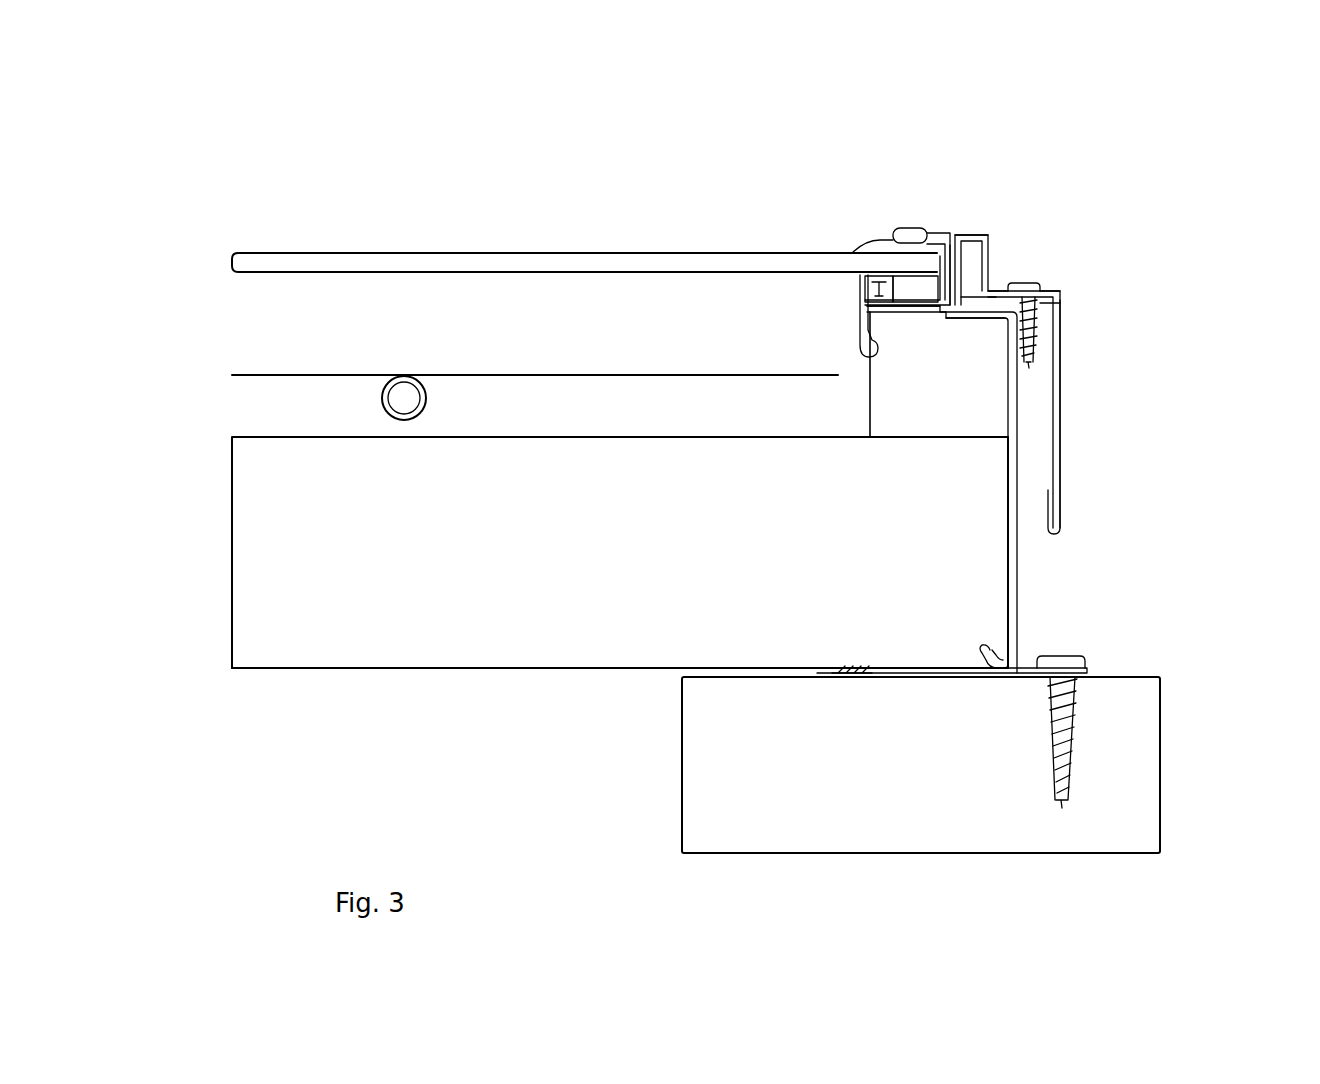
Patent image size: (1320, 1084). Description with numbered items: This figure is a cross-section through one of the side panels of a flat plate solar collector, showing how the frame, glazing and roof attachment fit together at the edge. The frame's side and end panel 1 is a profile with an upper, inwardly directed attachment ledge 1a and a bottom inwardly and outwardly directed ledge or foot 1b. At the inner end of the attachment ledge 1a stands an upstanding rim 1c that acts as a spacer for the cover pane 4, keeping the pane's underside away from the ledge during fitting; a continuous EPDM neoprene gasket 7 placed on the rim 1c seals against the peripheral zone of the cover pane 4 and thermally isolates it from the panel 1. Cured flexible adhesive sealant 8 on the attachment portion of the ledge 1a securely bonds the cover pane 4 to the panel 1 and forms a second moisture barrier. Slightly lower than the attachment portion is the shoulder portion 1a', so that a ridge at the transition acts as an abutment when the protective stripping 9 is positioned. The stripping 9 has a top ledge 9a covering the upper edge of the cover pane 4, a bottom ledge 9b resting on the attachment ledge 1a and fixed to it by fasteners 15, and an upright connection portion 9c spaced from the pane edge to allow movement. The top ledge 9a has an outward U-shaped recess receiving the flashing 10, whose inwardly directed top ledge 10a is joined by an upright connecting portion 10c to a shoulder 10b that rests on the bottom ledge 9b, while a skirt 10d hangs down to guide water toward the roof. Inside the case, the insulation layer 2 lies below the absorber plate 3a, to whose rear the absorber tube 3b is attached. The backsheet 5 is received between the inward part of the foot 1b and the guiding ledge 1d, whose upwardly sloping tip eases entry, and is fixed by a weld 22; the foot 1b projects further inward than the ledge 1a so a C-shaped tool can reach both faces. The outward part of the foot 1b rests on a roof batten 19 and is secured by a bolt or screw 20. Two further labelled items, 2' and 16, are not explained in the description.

The side and end panel 1 is at (1015, 548).
The upper attachment ledge 1a is at (1004, 423).
The shoulder portion 1a' is at (1044, 398).
The bottom ledge or foot 1b is at (1018, 670).
The upstanding rim 1c is at (873, 287).
The guiding ledge 1d is at (985, 650).
The insulation layer 2 is at (620, 552).
The insulating strip 2' is at (939, 374).
The absorber plate 3a is at (285, 372).
The absorber tube 3b is at (400, 398).
The cover pane 4 is at (365, 257).
The backsheet 5 is at (503, 668).
The gasket 7 is at (860, 297).
The flexible adhesive sealant layer 8 is at (913, 283).
The protective stripping 9 is at (858, 226).
The top ledge of protective stripping 9a is at (888, 242).
The bottom ledge of protective stripping 9b is at (1060, 302).
The connection portion 9c is at (955, 267).
The flashing 10 is at (1008, 222).
The top ledge of flashing 10a is at (945, 235).
The shoulder or intermediate ledge 10b is at (1040, 295).
The upright connecting portion 10c is at (987, 277).
The skirt 10d is at (1058, 378).
The fastener 15 is at (990, 292).
The screw 16 is at (1040, 283).
The batten 19 is at (1137, 806).
The bolt or screw 20 is at (1082, 664).
The weld 22 is at (850, 672).